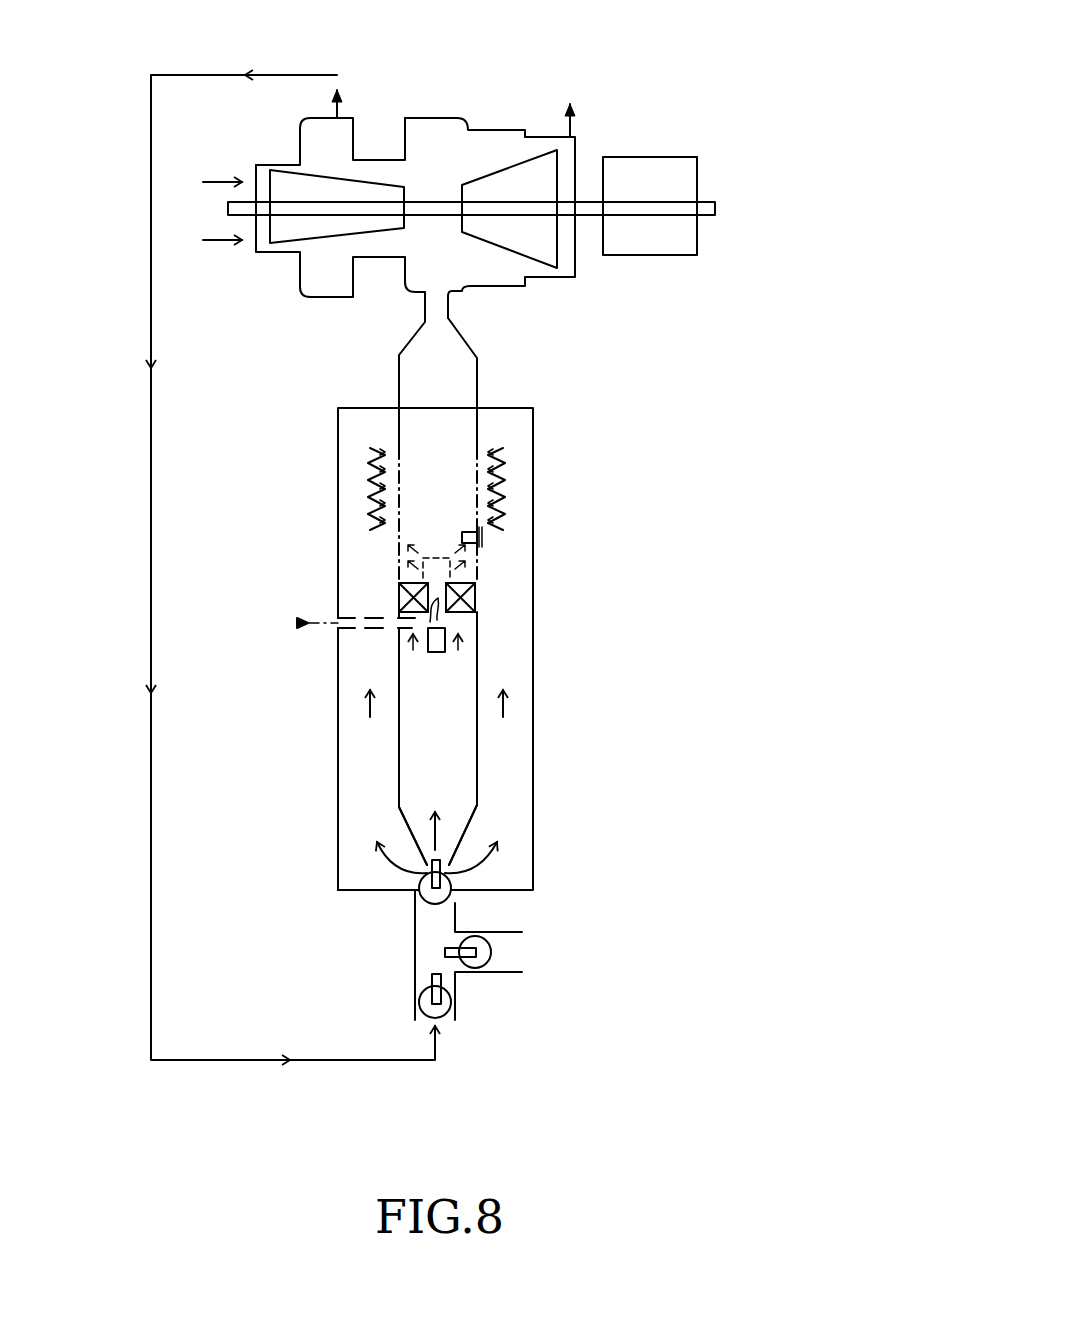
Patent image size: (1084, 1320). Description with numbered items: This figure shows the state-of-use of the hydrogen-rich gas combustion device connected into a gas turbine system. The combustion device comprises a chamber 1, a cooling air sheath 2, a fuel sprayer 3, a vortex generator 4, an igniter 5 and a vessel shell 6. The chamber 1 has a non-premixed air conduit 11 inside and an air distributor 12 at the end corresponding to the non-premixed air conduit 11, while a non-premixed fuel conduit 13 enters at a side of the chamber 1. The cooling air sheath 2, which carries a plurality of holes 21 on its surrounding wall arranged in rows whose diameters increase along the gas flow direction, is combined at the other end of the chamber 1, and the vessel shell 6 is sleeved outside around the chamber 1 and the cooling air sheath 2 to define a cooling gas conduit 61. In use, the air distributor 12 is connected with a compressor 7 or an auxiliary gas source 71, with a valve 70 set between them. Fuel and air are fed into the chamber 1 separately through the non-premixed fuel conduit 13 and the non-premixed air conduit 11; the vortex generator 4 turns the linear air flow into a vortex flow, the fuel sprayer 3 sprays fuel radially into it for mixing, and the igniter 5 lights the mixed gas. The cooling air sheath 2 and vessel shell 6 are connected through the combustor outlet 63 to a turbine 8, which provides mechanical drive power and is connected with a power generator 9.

The chamber 1 is at (477, 667).
The cooling air sheath 2 is at (400, 413).
The holes 21 is at (397, 452).
The fuel sprayer 3 is at (440, 640).
The vortex generator 4 is at (467, 598).
The igniter 5 is at (465, 542).
The vessel shell 6 is at (338, 710).
The cooling gas conduit 61 is at (353, 793).
The combustor outlet 63 is at (477, 370).
The compressor 7 is at (300, 165).
The turbine 8 is at (510, 127).
The power generator 9 is at (648, 157).
The non-premixed air conduit 11 is at (452, 787).
The air distributor 12 is at (450, 900).
The non-premixed fuel conduit 13 is at (352, 630).
The valve 70 is at (488, 970).
The auxiliary gas source 71 is at (523, 952).